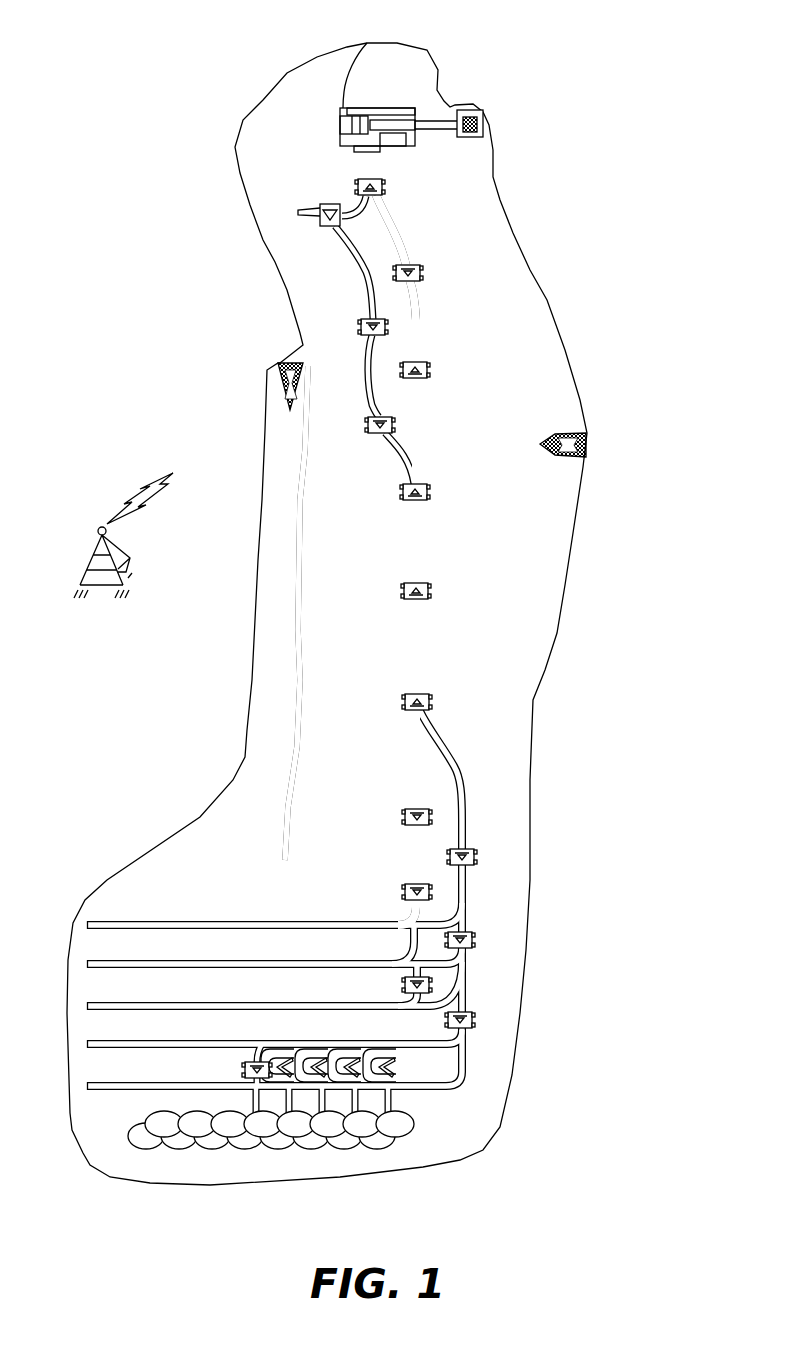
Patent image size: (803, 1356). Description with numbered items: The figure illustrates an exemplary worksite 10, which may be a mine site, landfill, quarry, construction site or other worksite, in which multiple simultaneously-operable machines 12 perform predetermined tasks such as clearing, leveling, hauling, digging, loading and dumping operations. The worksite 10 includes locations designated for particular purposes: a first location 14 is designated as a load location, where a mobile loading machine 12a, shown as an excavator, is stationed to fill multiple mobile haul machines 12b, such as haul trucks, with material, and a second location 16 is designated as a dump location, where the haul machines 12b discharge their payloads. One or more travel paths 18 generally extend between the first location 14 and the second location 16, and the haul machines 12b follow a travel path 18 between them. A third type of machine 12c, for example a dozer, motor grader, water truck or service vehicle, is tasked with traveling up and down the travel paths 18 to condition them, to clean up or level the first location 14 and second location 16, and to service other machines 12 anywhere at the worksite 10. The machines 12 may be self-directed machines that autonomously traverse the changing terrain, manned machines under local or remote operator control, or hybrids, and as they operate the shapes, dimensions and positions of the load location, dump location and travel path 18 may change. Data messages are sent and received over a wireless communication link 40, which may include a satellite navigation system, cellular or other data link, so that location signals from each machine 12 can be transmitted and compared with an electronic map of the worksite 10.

The worksite 10 is at (658, 976).
The machines 12 is at (516, 411).
The loading machine 12a is at (367, 43).
The haul machines 12b is at (428, 492).
The third type of machine 12c is at (278, 363).
The first location 14 is at (299, 151).
The second location 16 is at (466, 1131).
The travel path 18 is at (417, 638).
The wireless communication link 40 is at (97, 532).